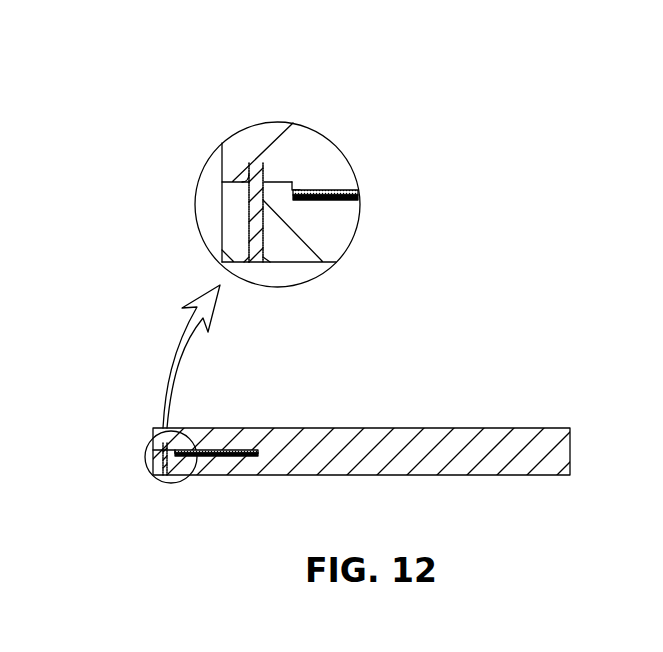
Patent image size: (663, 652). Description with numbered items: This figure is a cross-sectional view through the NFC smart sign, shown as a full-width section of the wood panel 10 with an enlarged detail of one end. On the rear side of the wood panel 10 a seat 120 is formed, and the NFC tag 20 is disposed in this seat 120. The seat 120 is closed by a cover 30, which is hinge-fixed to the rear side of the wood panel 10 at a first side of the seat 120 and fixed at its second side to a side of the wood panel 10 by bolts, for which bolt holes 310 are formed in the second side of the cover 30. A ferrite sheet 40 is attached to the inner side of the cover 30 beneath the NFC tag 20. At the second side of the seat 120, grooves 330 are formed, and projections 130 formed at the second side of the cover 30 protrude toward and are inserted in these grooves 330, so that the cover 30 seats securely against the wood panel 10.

The wood panel 10 is at (258, 135).
The seat 120 is at (286, 190).
The NFC tag 20 is at (318, 189).
The ferrite sheet 40 is at (346, 198).
The cover 30 is at (305, 250).
The bolt holes 310 is at (258, 253).
The grooves 330 is at (227, 183).
The projections 130 is at (237, 207).